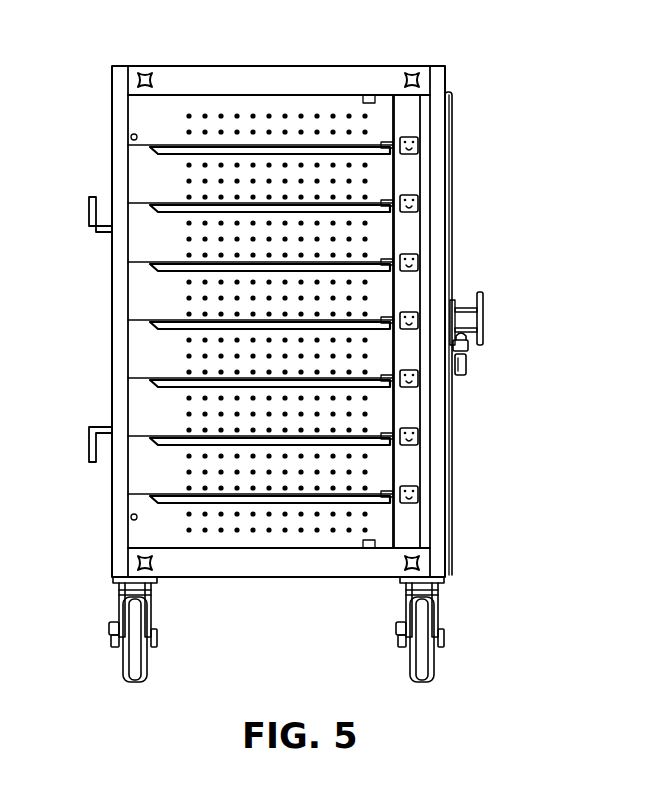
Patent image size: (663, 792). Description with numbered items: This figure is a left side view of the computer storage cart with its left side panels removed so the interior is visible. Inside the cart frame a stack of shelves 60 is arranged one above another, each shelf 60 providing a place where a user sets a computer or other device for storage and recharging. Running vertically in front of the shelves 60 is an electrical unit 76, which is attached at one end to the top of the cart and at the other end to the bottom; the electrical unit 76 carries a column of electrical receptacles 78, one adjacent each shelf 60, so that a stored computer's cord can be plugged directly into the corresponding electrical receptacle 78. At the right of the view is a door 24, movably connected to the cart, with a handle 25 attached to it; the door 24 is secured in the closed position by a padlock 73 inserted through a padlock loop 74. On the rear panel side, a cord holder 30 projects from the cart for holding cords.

The door 24 is at (452, 200).
The handle 25 is at (483, 320).
The cord holder 30 is at (88, 212).
The shelf 60 is at (156, 492).
The padlock 73 is at (466, 368).
The padlock loop 74 is at (462, 340).
The electrical unit 76 is at (412, 522).
The electrical receptacle 78 is at (410, 438).